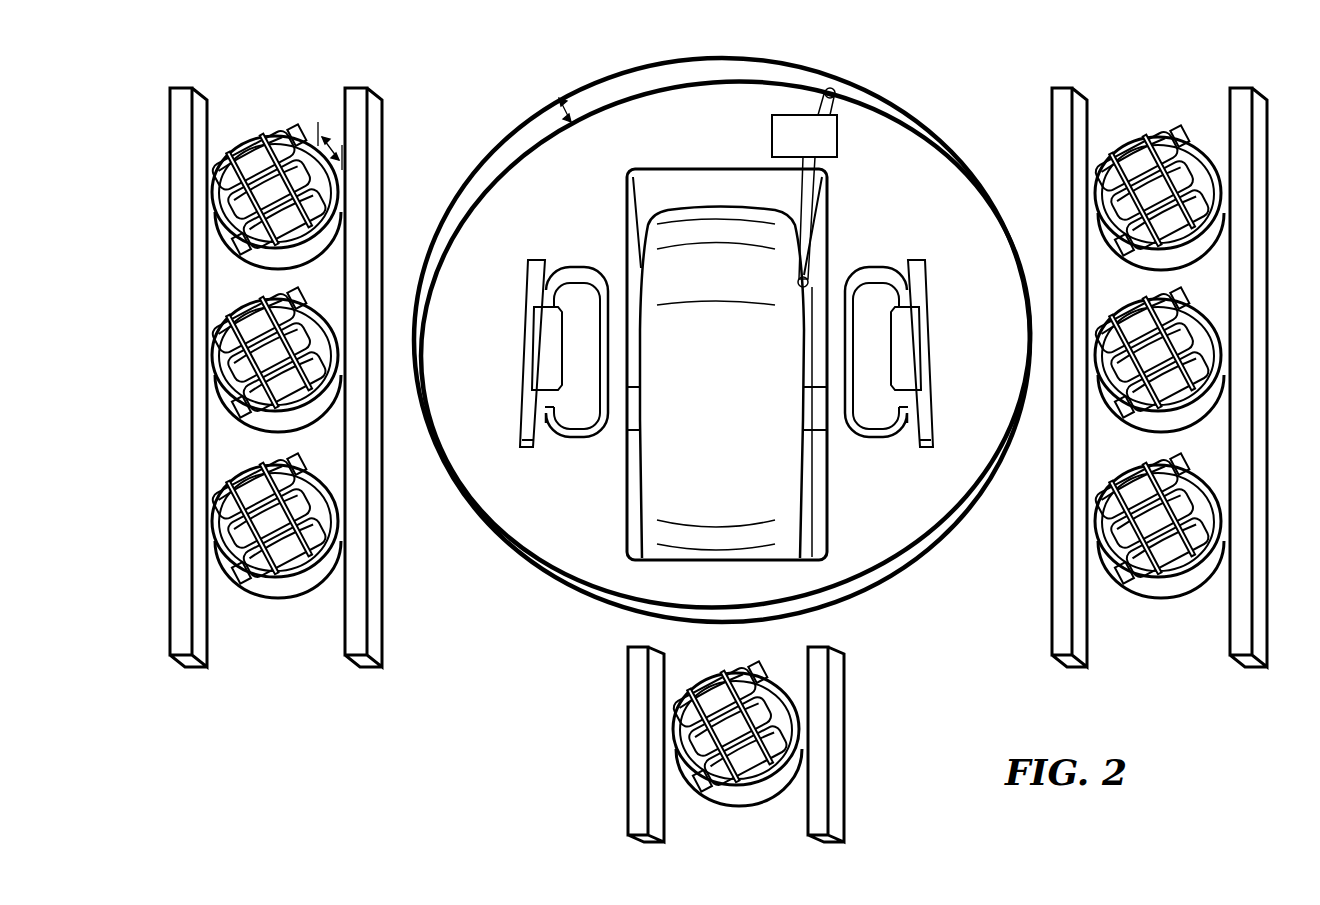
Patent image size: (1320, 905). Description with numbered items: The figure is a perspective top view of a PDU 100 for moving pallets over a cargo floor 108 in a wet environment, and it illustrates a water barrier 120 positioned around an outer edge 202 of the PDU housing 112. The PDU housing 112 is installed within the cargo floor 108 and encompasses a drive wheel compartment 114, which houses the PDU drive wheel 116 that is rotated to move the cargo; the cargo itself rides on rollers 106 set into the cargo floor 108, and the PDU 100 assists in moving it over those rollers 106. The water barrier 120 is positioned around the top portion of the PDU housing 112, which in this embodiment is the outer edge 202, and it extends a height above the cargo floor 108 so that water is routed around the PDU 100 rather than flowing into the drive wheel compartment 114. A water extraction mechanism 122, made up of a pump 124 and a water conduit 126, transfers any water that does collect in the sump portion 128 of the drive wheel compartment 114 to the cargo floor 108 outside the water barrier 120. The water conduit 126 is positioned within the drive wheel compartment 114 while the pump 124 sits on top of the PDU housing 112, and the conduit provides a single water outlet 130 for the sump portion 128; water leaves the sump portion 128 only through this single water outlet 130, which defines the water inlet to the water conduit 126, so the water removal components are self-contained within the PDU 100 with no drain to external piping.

The PDU 100 is at (423, 55).
The rollers 106 is at (278, 138).
The cargo floor 108 is at (1001, 126).
The PDU housing 112 is at (574, 489).
The drive wheel compartment 114 is at (627, 207).
The PDU drive wheel 116 is at (738, 396).
The water barrier 120 is at (515, 150).
The water extraction mechanism 122 is at (842, 169).
The pump 124 is at (772, 133).
The water conduit 126 is at (806, 232).
The sump portion 128 is at (807, 330).
The single water outlet 130 is at (808, 277).
The outer edge 202 is at (509, 176).